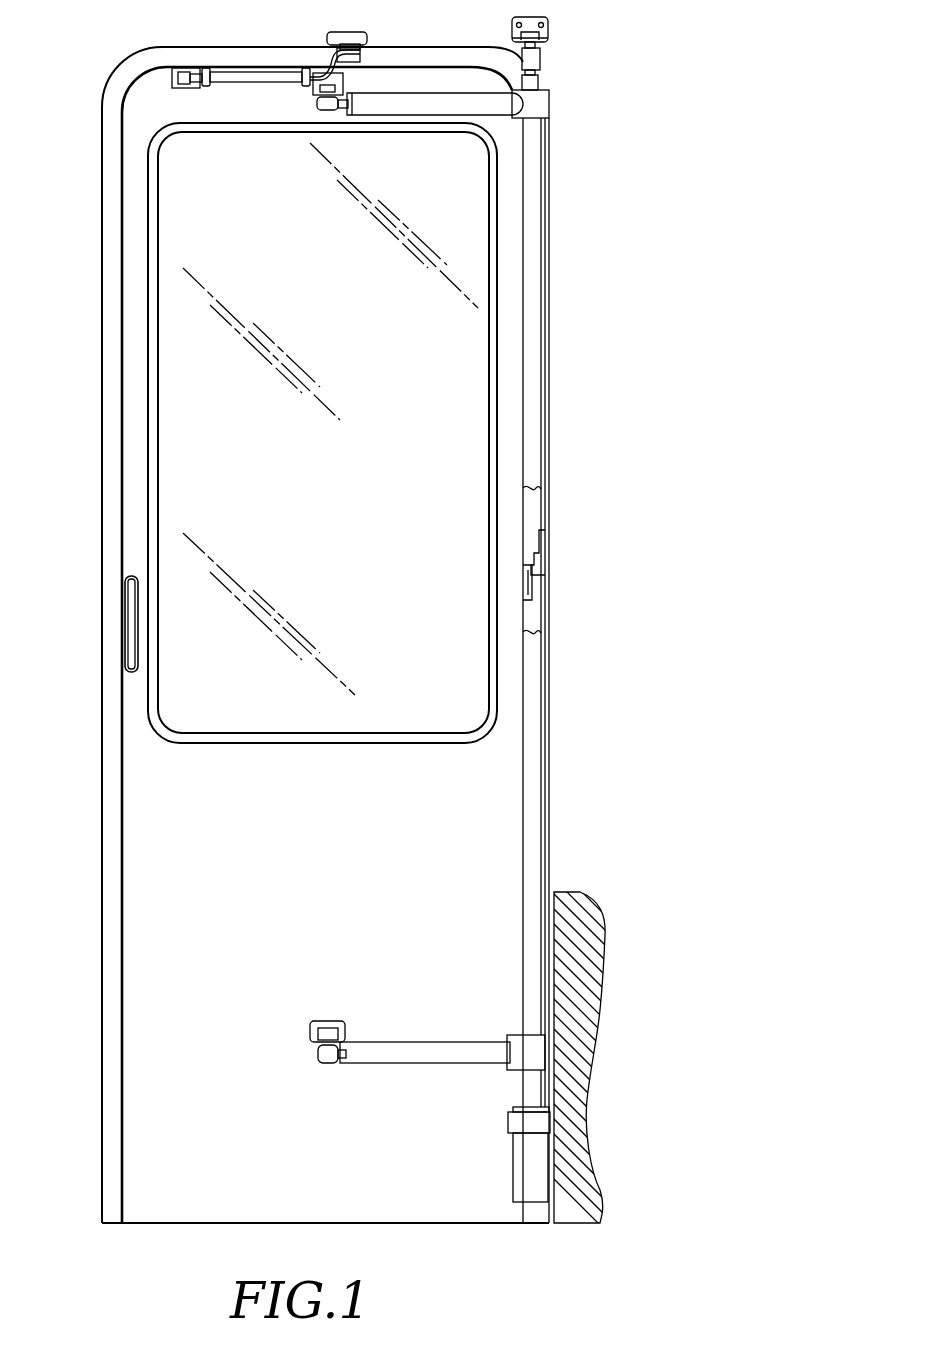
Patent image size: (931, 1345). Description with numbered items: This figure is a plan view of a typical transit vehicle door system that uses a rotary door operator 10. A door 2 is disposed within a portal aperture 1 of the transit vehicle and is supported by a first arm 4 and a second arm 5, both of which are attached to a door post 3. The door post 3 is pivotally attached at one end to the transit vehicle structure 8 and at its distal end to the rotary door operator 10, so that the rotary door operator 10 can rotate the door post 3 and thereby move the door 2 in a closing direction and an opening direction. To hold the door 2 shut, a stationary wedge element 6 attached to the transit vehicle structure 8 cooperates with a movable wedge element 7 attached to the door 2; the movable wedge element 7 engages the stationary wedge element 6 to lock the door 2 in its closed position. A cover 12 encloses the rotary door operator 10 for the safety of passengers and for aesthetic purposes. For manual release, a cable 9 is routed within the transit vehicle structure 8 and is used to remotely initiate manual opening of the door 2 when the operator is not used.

The portal aperture 1 is at (107, 805).
The door 2 is at (140, 1056).
The door post 3 is at (532, 805).
The first arm 4 is at (430, 1052).
The second arm 5 is at (415, 105).
The stationary wedge element 6 is at (545, 545).
The movable wedge element 7 is at (527, 593).
The transit vehicle structure 8 is at (585, 1128).
The cable 9 is at (550, 1110).
The rotary door operator 10 is at (483, 1232).
The cover 12 is at (532, 1195).